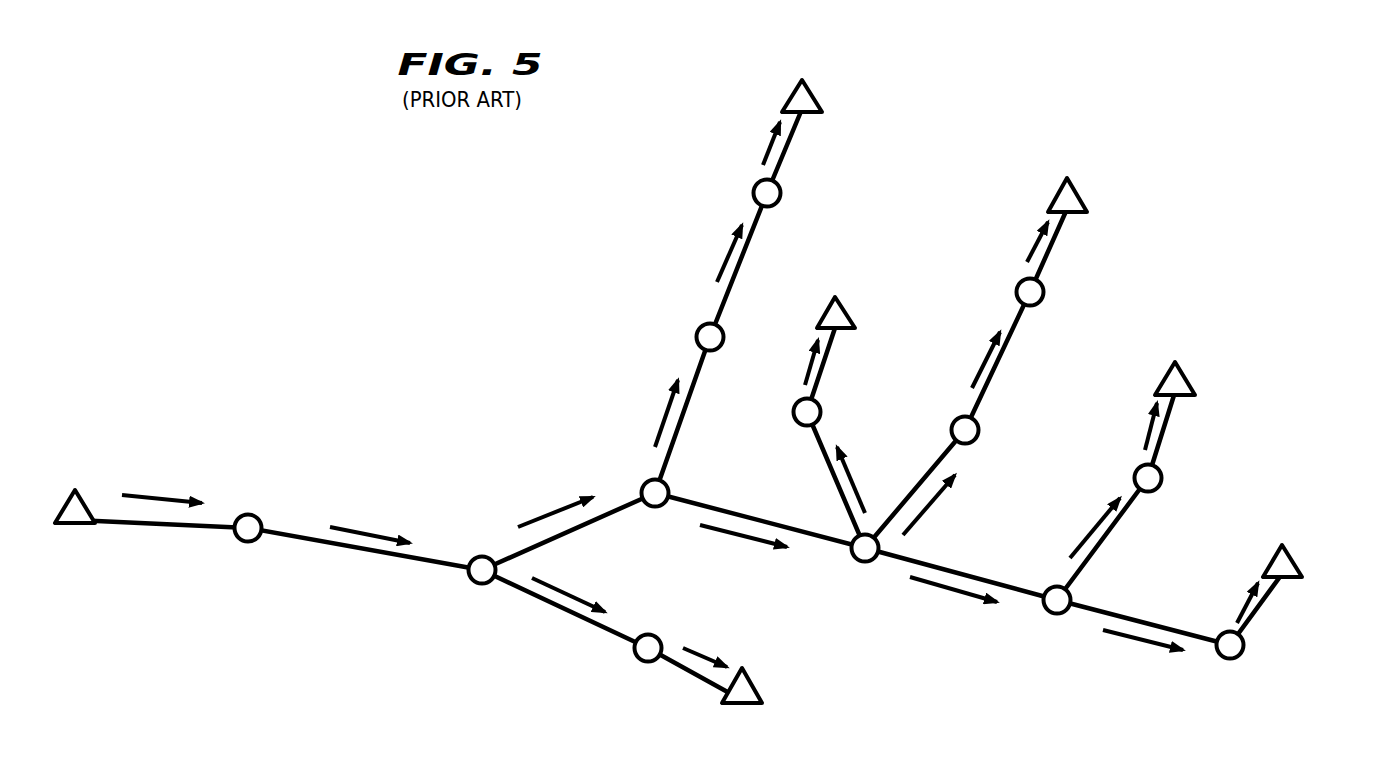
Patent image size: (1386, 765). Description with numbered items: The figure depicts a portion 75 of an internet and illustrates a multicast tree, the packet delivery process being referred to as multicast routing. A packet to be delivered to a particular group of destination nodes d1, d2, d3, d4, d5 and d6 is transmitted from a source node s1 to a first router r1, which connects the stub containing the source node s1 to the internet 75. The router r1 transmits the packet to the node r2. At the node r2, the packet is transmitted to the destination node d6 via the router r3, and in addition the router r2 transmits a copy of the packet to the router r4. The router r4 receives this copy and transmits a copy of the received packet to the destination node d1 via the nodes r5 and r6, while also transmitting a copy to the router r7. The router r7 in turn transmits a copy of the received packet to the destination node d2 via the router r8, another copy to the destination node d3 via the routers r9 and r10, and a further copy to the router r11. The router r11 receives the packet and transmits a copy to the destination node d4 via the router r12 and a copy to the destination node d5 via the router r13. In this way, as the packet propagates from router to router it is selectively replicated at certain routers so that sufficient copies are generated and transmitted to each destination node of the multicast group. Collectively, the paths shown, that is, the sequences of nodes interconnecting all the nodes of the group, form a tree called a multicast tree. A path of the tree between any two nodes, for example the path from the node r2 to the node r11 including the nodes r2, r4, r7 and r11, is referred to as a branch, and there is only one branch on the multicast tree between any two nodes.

The source node s1 is at (78, 525).
The destination node d1 is at (813, 92).
The destination node d2 is at (850, 315).
The destination node d3 is at (1080, 202).
The destination node d4 is at (1188, 383).
The destination node d5 is at (1293, 560).
The destination node d6 is at (753, 683).
The portion of an internet 75 is at (443, 325).
The first router r1 is at (257, 542).
The router r2 is at (473, 585).
The router r3 is at (662, 640).
The router r4 is at (647, 482).
The node r5 is at (700, 330).
The node r6 is at (782, 200).
The router r7 is at (858, 562).
The router r8 is at (822, 410).
The router r9 is at (978, 438).
The router r10 is at (1043, 303).
The router r11 is at (1062, 615).
The router r12 is at (1163, 485).
The router r13 is at (1233, 660).